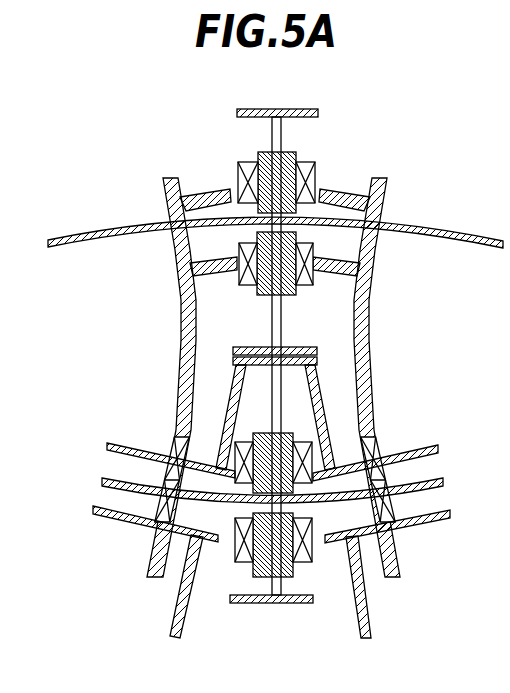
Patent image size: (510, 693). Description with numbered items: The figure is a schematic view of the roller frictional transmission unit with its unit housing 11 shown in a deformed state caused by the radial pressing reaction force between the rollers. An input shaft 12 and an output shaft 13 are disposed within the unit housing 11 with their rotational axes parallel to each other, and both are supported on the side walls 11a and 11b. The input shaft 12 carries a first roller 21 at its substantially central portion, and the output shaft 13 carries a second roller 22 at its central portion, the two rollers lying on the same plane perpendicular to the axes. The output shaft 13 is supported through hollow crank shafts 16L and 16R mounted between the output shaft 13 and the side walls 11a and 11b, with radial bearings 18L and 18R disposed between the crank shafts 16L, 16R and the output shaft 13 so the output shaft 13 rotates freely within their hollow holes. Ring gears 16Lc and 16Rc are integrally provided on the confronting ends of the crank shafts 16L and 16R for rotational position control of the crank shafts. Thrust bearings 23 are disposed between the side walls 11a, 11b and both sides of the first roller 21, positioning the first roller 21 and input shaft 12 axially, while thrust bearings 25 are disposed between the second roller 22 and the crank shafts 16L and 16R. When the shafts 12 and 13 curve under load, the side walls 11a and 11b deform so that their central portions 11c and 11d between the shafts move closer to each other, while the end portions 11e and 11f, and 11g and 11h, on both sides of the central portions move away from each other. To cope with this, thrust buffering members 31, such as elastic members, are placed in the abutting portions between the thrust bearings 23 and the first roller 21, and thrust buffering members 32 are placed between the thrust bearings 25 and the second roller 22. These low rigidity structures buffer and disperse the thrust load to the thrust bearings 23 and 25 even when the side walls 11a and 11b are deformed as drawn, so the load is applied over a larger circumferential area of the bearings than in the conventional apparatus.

The unit housing 11 is at (270, 342).
The side wall 11a is at (126, 340).
The side wall 11b is at (418, 340).
The central portion 11c is at (179, 312).
The central portion 11d is at (371, 312).
The end portion 11e is at (166, 196).
The end portion 11f is at (115, 503).
The end portion 11g is at (386, 205).
The end portion 11h is at (429, 503).
The input shaft 12 is at (74, 232).
The output shaft 13 is at (122, 494).
The crank shaft 16L is at (129, 435).
The crank shaft 16R is at (414, 438).
The ring gear 16Lc is at (171, 620).
The ring gear 16Rc is at (371, 620).
The radial bearing 18L is at (164, 474).
The radial bearing 18R is at (386, 475).
The first roller 21 is at (246, 108).
The second roller 22 is at (258, 604).
The thrust bearings 23 is at (237, 180).
The thrust bearings 25 is at (236, 568).
The thrust buffering members 31 is at (262, 152).
The thrust buffering members 32 is at (256, 582).